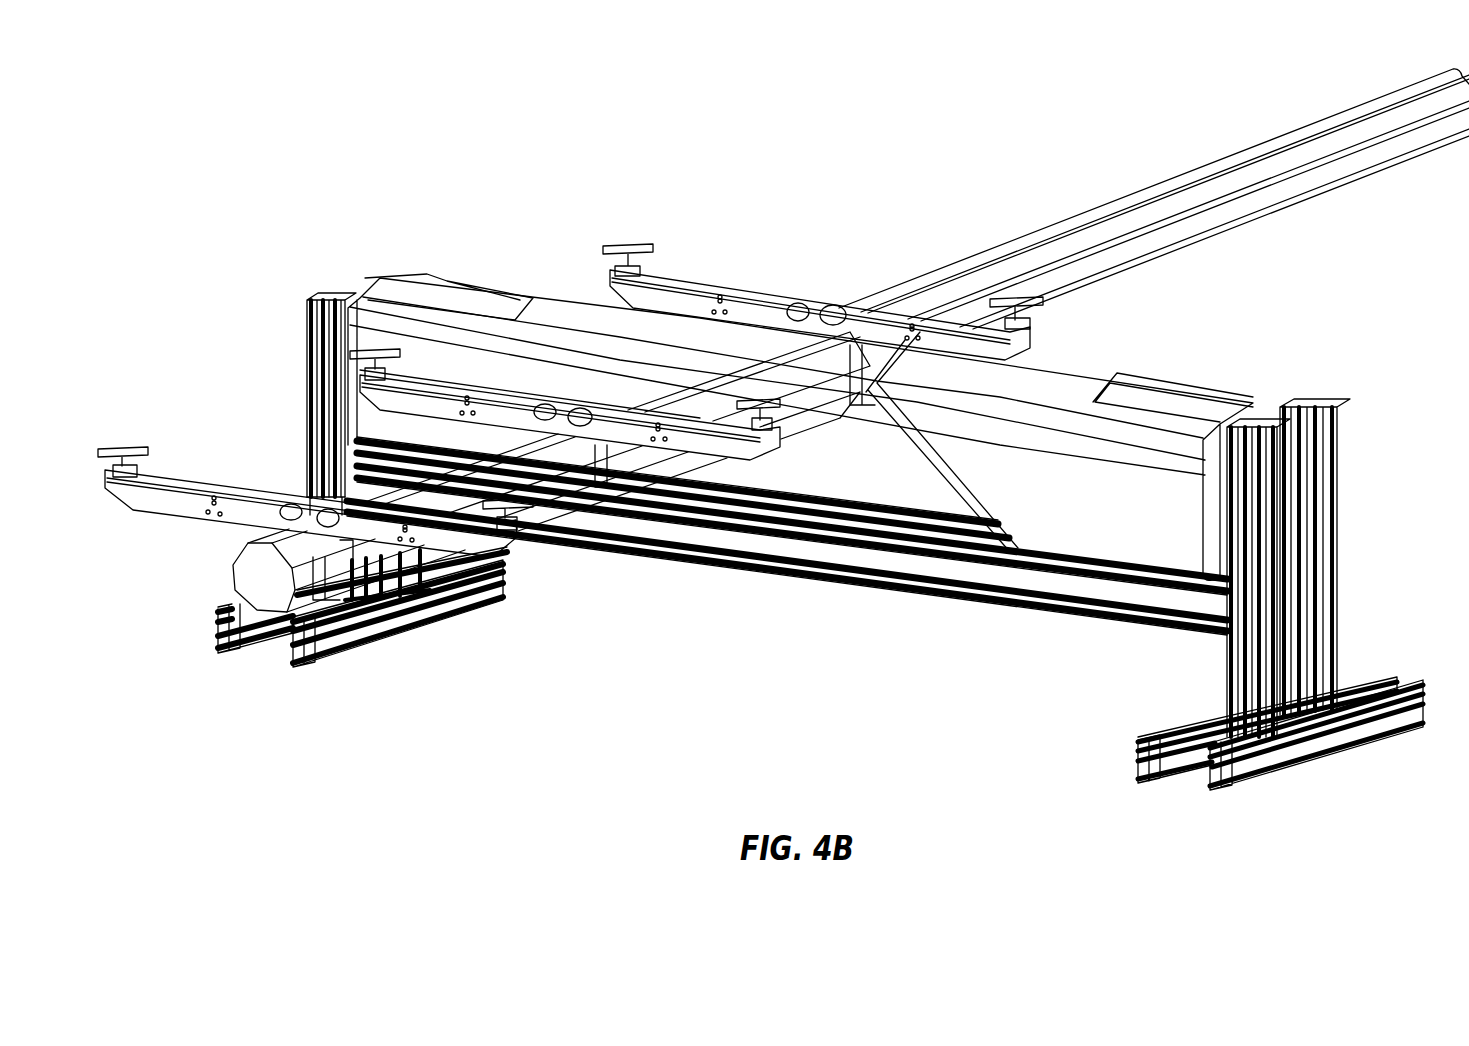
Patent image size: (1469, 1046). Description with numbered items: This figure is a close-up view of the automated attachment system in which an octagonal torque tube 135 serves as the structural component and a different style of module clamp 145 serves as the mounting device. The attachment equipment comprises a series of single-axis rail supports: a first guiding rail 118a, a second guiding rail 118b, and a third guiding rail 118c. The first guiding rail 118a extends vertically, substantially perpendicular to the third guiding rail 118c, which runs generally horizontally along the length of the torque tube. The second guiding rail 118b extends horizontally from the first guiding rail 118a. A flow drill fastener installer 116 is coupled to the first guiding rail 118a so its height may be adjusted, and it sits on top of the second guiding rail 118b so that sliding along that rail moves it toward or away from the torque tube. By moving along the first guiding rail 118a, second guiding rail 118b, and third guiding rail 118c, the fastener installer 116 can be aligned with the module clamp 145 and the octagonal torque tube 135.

The octagonal torque tube 135 is at (1148, 188).
The module clamp 145 is at (733, 282).
The flow drill fastener installer 116 is at (1216, 393).
The first guiding rail 118a is at (1336, 513).
The second guiding rail 118b is at (855, 562).
The third guiding rail 118c is at (458, 594).